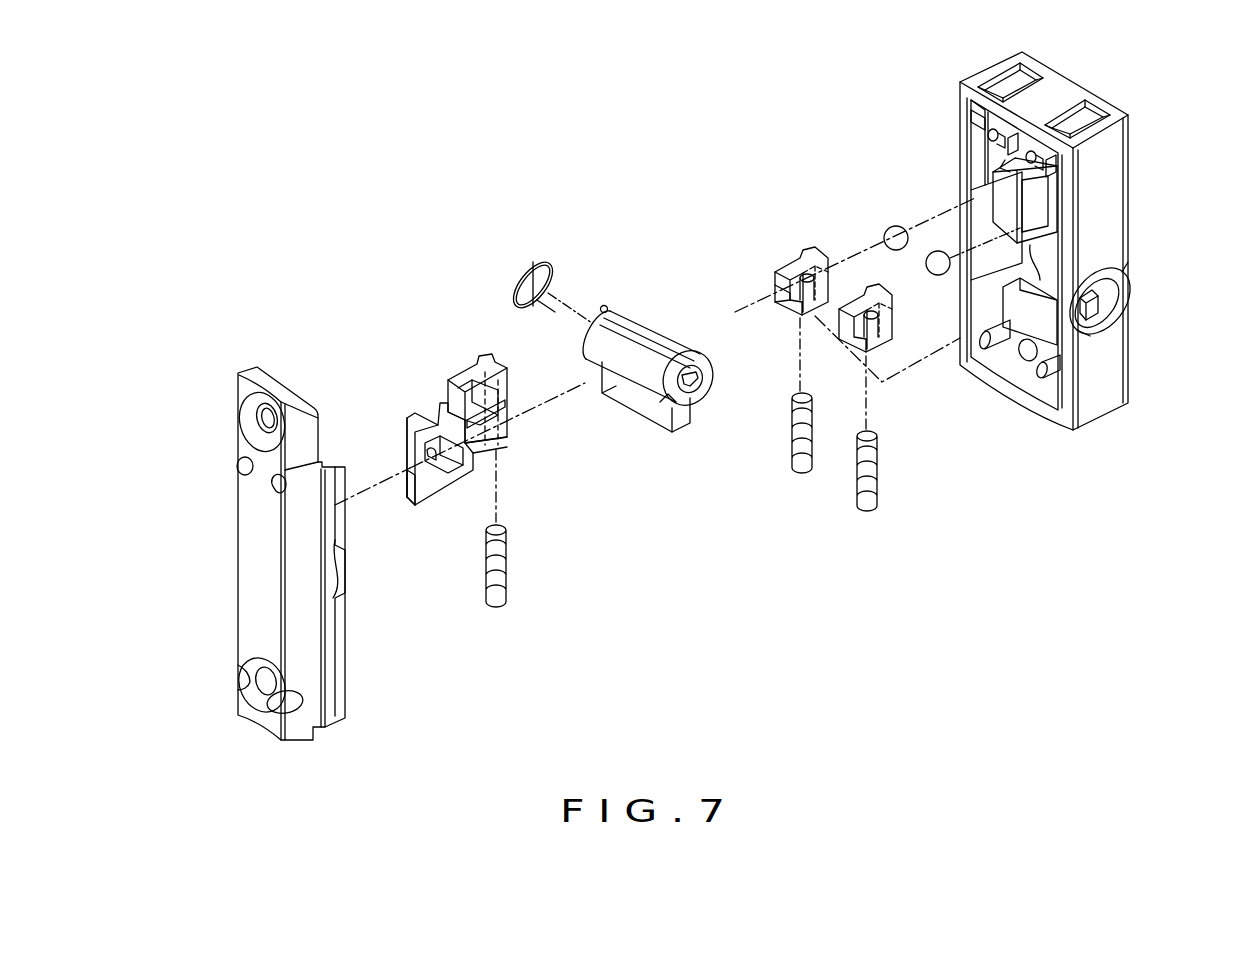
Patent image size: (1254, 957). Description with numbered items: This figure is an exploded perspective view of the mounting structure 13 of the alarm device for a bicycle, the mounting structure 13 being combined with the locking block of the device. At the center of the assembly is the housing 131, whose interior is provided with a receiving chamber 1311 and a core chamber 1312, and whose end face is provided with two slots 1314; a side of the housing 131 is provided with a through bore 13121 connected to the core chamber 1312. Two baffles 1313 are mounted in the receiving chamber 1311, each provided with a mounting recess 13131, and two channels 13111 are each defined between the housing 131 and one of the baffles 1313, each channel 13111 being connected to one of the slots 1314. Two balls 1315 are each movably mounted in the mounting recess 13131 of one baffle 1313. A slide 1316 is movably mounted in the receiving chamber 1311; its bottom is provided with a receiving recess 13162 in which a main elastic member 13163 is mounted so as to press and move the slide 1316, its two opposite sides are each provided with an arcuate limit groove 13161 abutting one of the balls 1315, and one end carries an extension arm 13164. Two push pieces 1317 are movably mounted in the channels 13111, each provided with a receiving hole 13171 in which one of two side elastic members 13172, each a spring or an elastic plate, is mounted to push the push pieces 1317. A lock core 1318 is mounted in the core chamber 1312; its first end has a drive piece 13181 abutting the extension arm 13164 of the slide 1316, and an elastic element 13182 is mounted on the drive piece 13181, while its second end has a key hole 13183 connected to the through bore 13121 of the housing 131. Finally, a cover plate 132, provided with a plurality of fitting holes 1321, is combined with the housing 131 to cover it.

The mounting structure 13 is at (318, 226).
The housing 131 is at (1128, 262).
The cover plate 132 is at (245, 553).
The receiving chamber 1311 is at (1032, 198).
The core chamber 1312 is at (1085, 336).
The baffles 1313 is at (1015, 185).
The slots 1314 is at (1092, 110).
The balls 1315 is at (884, 238).
The slide 1316 is at (452, 377).
The push pieces 1317 is at (775, 272).
The lock core 1318 is at (650, 405).
The fitting holes 1321 is at (250, 430).
The channels 13111 is at (998, 145).
The through bore 13121 is at (1105, 322).
The mounting recess 13131 is at (1013, 166).
The arcuate limit groove 13161 is at (455, 395).
The receiving recess 13162 is at (503, 457).
The main elastic member 13163 is at (510, 572).
The extension arm 13164 is at (433, 493).
The receiving hole 13171 is at (775, 298).
The side elastic members 13172 is at (798, 472).
The drive piece 13181 is at (592, 330).
The elastic element 13182 is at (518, 266).
The key hole 13183 is at (700, 396).